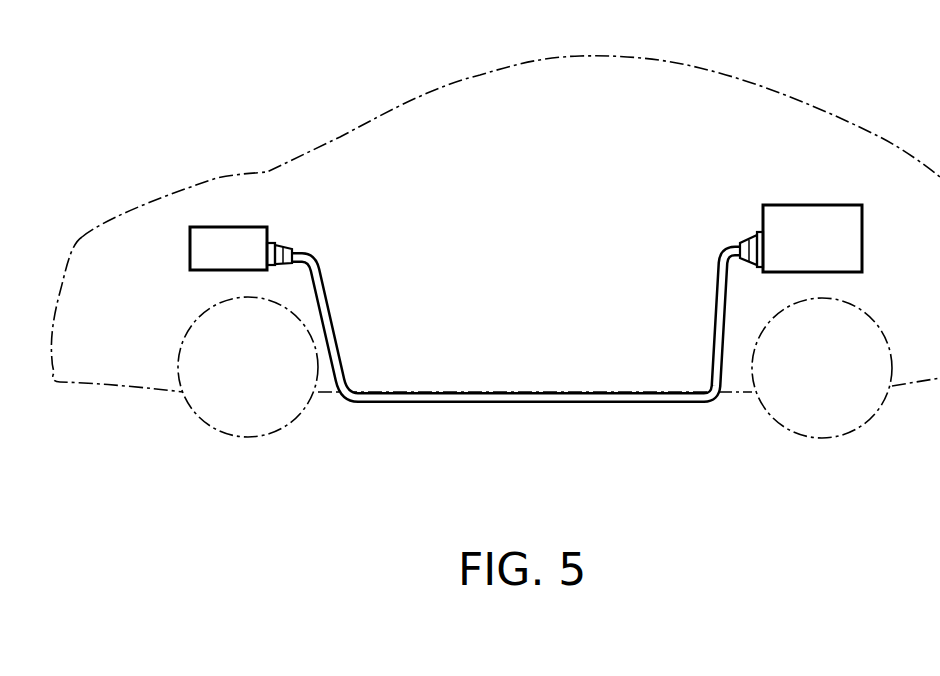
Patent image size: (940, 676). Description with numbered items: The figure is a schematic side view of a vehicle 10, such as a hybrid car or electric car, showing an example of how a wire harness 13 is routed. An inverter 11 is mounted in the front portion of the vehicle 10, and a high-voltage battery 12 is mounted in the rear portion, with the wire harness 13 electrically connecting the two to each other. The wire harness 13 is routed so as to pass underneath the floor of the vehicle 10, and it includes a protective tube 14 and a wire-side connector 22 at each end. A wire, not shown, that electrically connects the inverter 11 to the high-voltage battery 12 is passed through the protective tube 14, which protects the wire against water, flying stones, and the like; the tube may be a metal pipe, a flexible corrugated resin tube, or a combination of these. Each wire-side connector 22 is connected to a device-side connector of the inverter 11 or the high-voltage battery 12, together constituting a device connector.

The vehicle 10 is at (880, 137).
The inverter 11 is at (222, 227).
The high-voltage battery 12 is at (821, 205).
The wire harness 13 is at (662, 210).
The protective tube 14 is at (522, 405).
The wire-side connector 22 is at (283, 250).